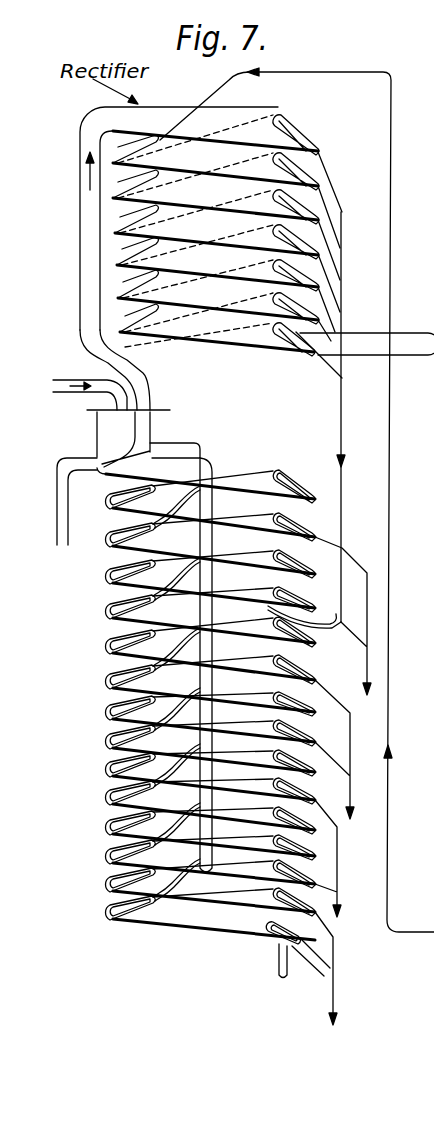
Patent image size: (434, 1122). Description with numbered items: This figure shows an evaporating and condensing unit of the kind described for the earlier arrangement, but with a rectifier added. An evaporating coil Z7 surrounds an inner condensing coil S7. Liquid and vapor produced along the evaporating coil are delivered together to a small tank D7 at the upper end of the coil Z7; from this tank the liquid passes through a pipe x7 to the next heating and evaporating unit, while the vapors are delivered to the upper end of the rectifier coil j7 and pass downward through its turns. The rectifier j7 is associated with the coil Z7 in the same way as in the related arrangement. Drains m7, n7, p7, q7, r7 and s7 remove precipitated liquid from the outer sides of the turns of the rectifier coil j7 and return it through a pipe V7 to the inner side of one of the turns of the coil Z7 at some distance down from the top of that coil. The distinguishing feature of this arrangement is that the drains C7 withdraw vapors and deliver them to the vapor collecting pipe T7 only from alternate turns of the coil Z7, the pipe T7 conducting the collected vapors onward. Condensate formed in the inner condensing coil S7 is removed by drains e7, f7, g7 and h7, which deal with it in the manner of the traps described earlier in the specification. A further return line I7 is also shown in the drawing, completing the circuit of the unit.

The rectifier coil j7 is at (252, 112).
The drain m7 is at (335, 198).
The drain n7 is at (333, 233).
The drain p7 is at (334, 266).
The drain q7 is at (335, 300).
The drain r7 is at (321, 330).
The drain s7 is at (326, 372).
The pipe V7 is at (342, 410).
The return pipe I7 is at (388, 640).
The small tank D7 is at (147, 427).
The vapor collecting pipe T7 is at (208, 447).
The pipe x7 is at (57, 522).
The evaporating coil Z7 is at (248, 467).
The condensing coil S7 is at (288, 470).
The drain C7 is at (167, 510).
The drain e7 is at (367, 665).
The drain f7 is at (350, 787).
The drain g7 is at (339, 892).
The drain h7 is at (322, 968).